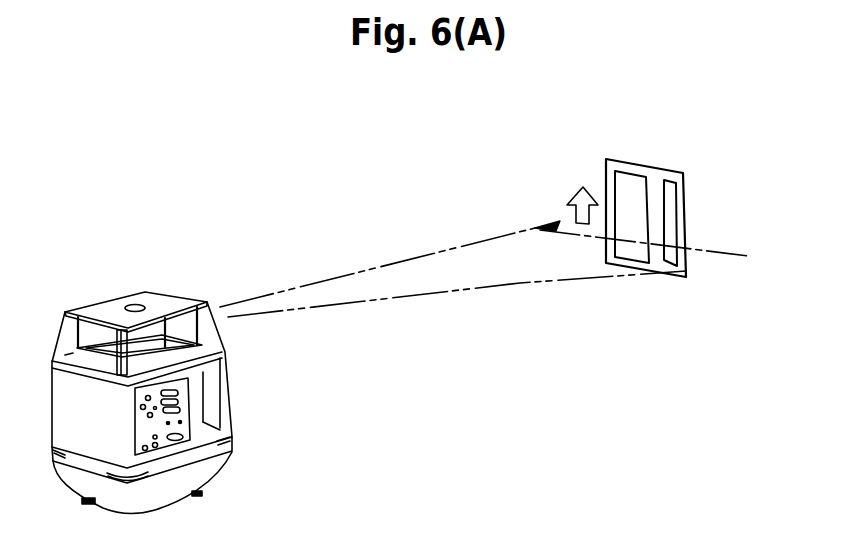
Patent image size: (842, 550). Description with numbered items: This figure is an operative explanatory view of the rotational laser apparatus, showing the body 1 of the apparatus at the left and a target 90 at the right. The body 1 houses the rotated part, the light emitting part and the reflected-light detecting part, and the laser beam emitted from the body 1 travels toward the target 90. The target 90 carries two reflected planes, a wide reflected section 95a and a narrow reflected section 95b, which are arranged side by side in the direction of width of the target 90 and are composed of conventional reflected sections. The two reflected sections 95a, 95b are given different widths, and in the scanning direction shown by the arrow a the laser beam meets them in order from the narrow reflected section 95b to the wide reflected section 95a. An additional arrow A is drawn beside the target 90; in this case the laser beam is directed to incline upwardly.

The body 1 is at (142, 358).
The target 90 is at (646, 182).
The wide reflected section 95a is at (625, 188).
The narrow reflected section 95b is at (672, 195).
The moving direction of target A is at (570, 198).
The arrow indicating scanning direction a is at (699, 251).